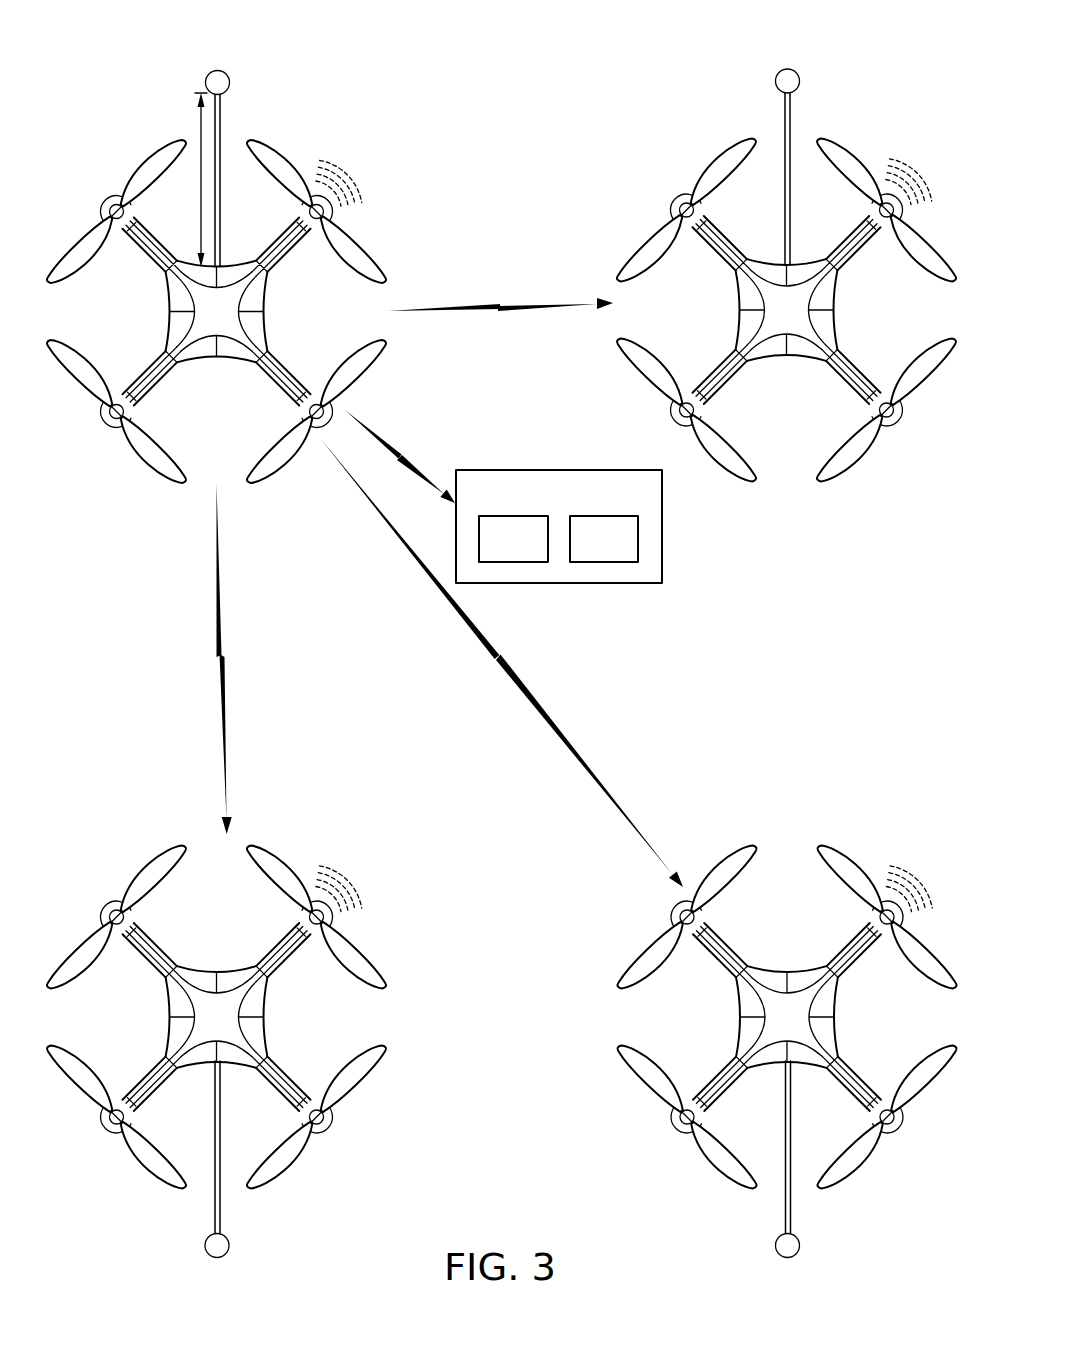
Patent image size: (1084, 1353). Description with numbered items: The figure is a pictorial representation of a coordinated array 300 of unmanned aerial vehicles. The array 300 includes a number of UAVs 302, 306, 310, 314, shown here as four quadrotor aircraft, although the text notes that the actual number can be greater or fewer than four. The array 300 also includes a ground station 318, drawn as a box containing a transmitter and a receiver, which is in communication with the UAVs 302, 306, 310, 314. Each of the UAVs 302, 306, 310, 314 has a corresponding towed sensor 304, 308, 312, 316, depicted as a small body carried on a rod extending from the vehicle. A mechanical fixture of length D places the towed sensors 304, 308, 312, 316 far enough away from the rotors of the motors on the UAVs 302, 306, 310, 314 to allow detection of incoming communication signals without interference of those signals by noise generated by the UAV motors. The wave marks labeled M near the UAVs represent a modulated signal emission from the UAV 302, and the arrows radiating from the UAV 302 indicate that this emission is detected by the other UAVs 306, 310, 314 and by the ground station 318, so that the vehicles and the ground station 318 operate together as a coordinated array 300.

The array 300 is at (633, 63).
The UAV 302 is at (216, 275).
The towed sensor 304 is at (179, 162).
The UAV 306 is at (786, 274).
The towed sensor 308 is at (824, 162).
The UAV 310 is at (216, 1056).
The towed sensor 312 is at (179, 1168).
The UAV 314 is at (787, 1056).
The towed sensor 316 is at (825, 1168).
The ground station 318 is at (588, 462).